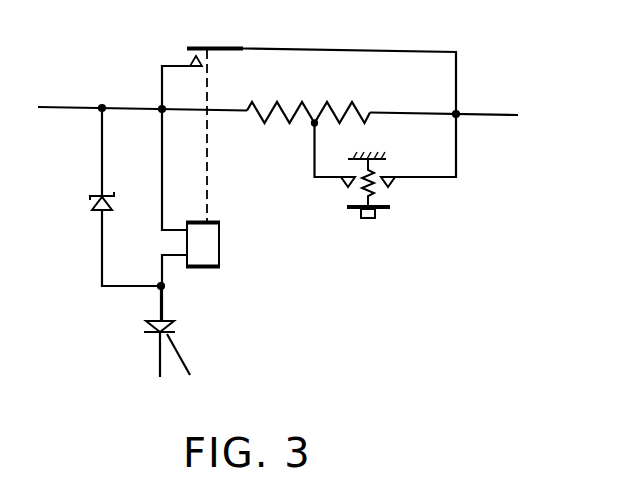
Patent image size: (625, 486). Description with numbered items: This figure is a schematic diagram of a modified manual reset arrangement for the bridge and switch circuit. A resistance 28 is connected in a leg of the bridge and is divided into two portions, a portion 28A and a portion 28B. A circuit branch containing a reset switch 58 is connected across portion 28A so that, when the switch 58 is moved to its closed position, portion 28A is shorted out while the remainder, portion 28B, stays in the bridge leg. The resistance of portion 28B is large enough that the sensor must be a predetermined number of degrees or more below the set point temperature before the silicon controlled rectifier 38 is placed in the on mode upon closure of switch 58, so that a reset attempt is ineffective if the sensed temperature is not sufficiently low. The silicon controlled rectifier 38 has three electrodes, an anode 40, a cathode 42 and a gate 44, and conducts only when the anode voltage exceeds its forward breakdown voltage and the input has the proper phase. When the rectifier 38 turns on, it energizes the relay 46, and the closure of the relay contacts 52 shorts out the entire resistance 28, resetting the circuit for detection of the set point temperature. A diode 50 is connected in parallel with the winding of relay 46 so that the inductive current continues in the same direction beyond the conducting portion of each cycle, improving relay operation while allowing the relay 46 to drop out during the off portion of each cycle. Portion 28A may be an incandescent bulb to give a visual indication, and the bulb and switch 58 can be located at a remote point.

The resistance 28 is at (299, 109).
The portion of resistance 28A is at (330, 107).
The portion of resistance 28B is at (258, 116).
The silicon controlled rectifier 38 is at (173, 322).
The anode 40 is at (160, 300).
The cathode 42 is at (158, 356).
The gate 44 is at (190, 366).
The relay 46 is at (219, 240).
The diode 50 is at (88, 201).
The contacts 52 is at (187, 58).
The reset switch 58 is at (390, 197).